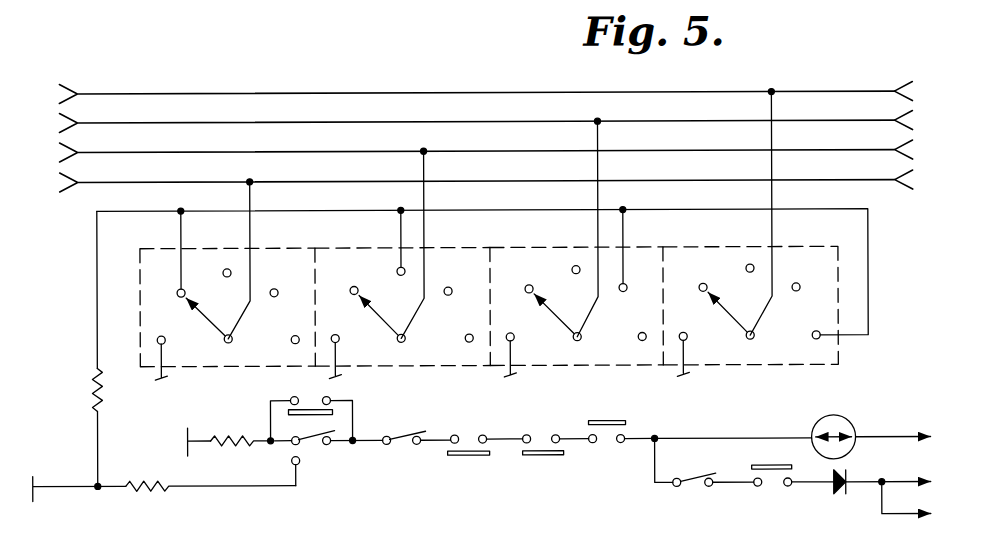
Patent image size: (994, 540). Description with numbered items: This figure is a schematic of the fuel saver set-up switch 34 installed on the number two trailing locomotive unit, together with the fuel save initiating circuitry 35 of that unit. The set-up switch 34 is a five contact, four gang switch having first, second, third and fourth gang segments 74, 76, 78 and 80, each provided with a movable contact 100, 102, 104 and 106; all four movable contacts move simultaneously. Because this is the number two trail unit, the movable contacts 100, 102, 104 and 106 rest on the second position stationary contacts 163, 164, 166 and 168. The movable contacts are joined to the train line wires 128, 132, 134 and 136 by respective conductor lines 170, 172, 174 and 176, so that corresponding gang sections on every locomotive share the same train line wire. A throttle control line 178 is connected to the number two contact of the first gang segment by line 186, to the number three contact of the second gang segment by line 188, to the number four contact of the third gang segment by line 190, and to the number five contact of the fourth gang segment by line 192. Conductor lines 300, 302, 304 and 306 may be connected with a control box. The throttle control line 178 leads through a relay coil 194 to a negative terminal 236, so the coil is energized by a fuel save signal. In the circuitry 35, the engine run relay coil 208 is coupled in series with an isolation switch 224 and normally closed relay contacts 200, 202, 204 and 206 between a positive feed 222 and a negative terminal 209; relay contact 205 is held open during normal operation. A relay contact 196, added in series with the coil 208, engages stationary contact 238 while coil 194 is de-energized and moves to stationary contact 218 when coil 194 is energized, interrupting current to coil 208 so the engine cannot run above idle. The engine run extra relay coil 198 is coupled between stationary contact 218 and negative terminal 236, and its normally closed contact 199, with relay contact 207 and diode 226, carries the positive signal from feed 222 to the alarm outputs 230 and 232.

The train line wire 136 is at (174, 93).
The train line wire 134 is at (169, 122).
The train line wire 132 is at (164, 151).
The train line wire 128 is at (168, 181).
The conductor line 170 is at (252, 197).
The conductor line 172 is at (426, 168).
The conductor line 174 is at (600, 137).
The conductor line 176 is at (774, 135).
The line 186 is at (179, 227).
The line 188 is at (396, 226).
The line 190 is at (625, 226).
The line 192 is at (870, 223).
The throttle control line 178 is at (97, 335).
The relay coil 194 is at (93, 384).
The negative terminal 236 is at (34, 480).
The engine run extra relay coil 198 is at (149, 492).
The fuel saver set-up switch 34 is at (523, 322).
The first gang segment 74 is at (260, 368).
The second gang segment 76 is at (454, 368).
The third gang segment 78 is at (631, 368).
The fourth gang segment 80 is at (802, 368).
The movable contact 100 is at (214, 334).
The movable contact 102 is at (387, 333).
The movable contact 104 is at (562, 332).
The movable contact 106 is at (735, 332).
The second position stationary contact 163 is at (186, 292).
The second position stationary contact 164 is at (359, 290).
The second position stationary contact 166 is at (534, 289).
The second position stationary contact 168 is at (708, 288).
The conductor line 300 is at (166, 379).
The conductor line 302 is at (340, 378).
The conductor line 304 is at (515, 377).
The conductor line 306 is at (688, 377).
The negative terminal 209 is at (180, 436).
The engine run relay coil 208 is at (247, 432).
The relay contact 205 is at (301, 416).
The stationary contact 238 is at (300, 443).
The relay contact 196 is at (315, 446).
The stationary contact 218 is at (300, 463).
The normally closed relay contact 206 is at (417, 430).
The fuel save initiating circuitry 35 is at (422, 467).
The normally closed relay contact 204 is at (480, 457).
The normally closed relay contact 202 is at (555, 457).
The normally closed relay contact 200 is at (614, 421).
The normally closed contact 199 is at (706, 476).
The relay contact 207 is at (781, 466).
The isolation switch 224 is at (848, 423).
The diode 226 is at (838, 492).
The positive feed 222 is at (926, 407).
The output 230 is at (921, 452).
The output 232 is at (921, 494).